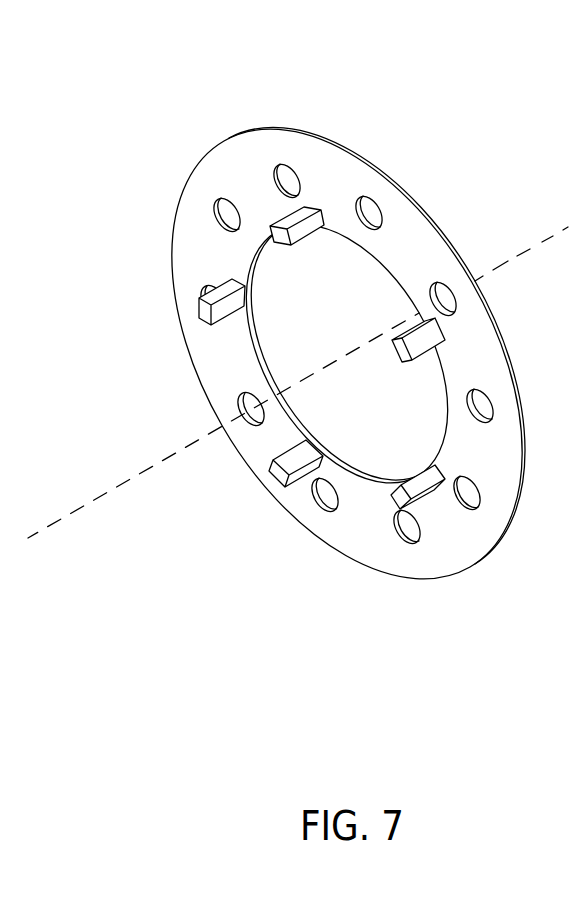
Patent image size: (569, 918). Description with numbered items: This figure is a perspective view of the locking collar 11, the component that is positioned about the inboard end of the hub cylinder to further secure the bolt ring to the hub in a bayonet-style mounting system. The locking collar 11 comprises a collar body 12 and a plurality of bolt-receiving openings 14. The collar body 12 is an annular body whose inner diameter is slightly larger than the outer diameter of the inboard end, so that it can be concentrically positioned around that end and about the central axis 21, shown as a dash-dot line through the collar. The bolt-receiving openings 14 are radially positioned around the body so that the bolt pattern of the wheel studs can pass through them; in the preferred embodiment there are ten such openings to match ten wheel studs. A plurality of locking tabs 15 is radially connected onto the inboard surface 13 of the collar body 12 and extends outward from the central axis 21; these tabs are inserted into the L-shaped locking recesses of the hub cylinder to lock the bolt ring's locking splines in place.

The locking collar 11 is at (298, 332).
The collar body 12 is at (308, 135).
The inboard surface 13 is at (488, 365).
The bolt-receiving openings 14 is at (216, 220).
The locking tabs 15 is at (290, 246).
The central axis 21 is at (28, 538).